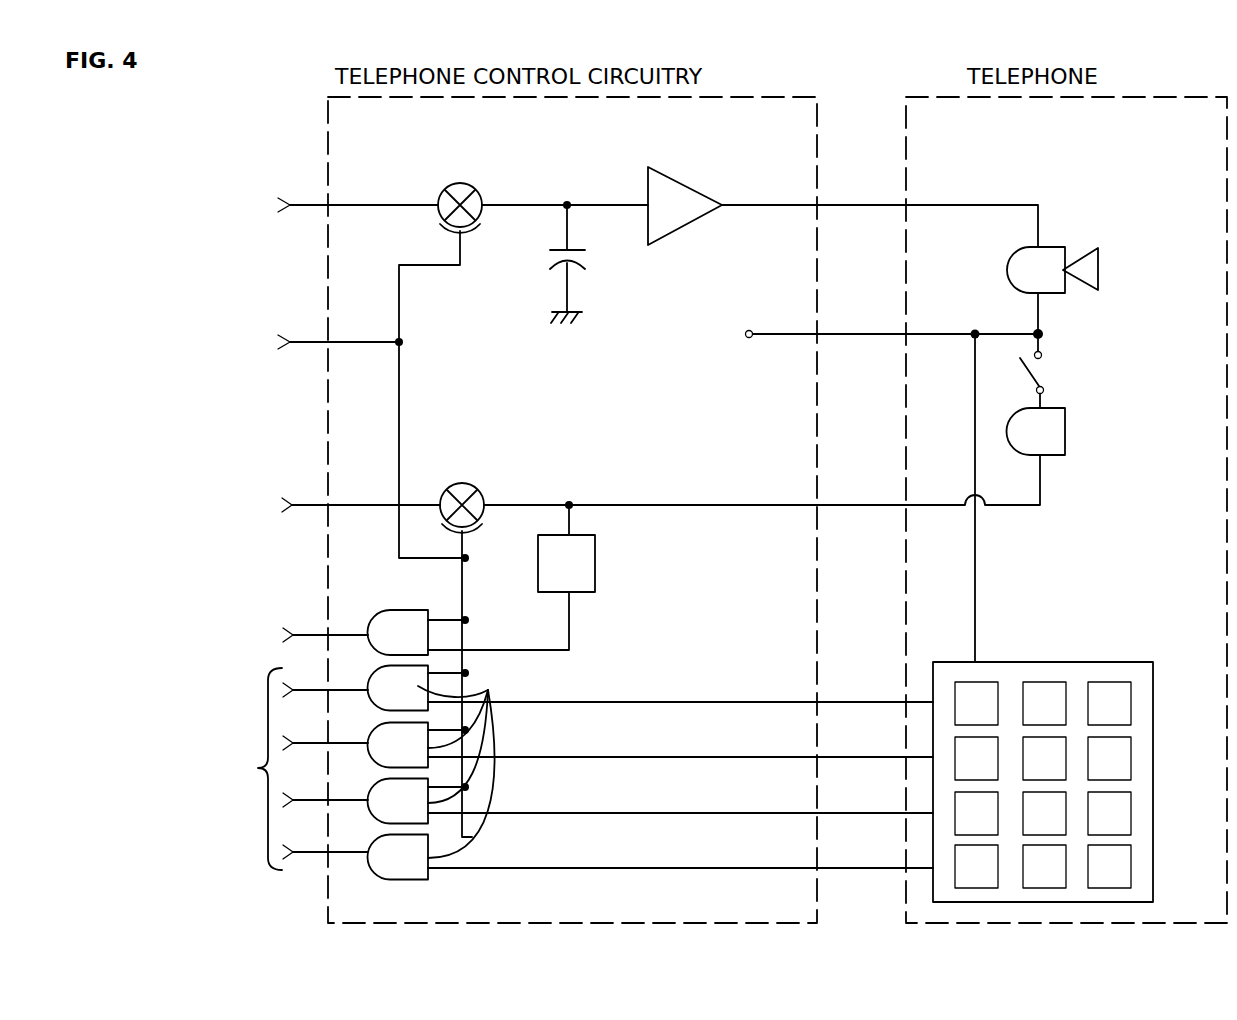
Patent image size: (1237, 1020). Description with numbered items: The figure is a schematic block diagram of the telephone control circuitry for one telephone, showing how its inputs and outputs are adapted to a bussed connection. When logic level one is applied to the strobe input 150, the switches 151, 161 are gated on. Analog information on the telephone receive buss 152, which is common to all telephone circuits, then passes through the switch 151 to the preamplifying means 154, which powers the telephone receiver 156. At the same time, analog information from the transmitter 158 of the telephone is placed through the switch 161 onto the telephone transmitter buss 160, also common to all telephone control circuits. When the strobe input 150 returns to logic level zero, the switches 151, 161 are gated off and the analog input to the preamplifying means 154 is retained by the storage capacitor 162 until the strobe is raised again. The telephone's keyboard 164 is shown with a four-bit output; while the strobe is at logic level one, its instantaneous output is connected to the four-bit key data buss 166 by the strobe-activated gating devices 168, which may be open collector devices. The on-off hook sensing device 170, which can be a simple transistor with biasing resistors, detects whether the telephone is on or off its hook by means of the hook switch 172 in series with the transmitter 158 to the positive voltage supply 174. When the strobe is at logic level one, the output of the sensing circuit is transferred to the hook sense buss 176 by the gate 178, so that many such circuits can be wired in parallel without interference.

The strobe input 150 is at (281, 338).
The switch 151 is at (484, 192).
The telephone receive buss 152 is at (263, 187).
The preamplifying means 154 is at (683, 186).
The telephone receiver 156 is at (1097, 279).
The transmitter 158 is at (1050, 443).
The telephone transmitter buss 160 is at (768, 500).
The switch 161 is at (487, 491).
The storage capacitor 162 is at (544, 251).
The keyboard 164 is at (1140, 673).
The key data buss 166 is at (235, 767).
The gating devices 168 is at (487, 693).
The on-off hook sensing device 170 is at (571, 579).
The hook switch 172 is at (1146, 353).
The positive voltage supply 174 is at (738, 352).
The hook sense buss 176 is at (277, 625).
The gate 178 is at (400, 622).